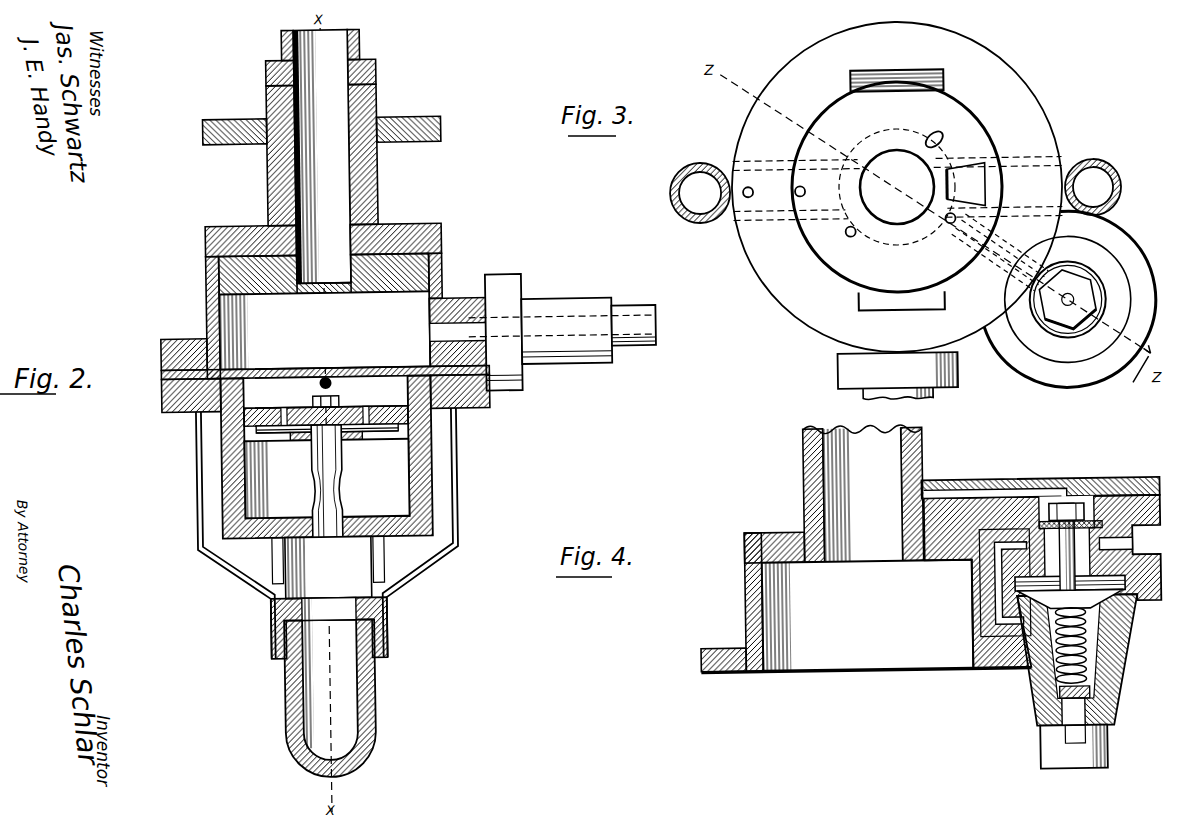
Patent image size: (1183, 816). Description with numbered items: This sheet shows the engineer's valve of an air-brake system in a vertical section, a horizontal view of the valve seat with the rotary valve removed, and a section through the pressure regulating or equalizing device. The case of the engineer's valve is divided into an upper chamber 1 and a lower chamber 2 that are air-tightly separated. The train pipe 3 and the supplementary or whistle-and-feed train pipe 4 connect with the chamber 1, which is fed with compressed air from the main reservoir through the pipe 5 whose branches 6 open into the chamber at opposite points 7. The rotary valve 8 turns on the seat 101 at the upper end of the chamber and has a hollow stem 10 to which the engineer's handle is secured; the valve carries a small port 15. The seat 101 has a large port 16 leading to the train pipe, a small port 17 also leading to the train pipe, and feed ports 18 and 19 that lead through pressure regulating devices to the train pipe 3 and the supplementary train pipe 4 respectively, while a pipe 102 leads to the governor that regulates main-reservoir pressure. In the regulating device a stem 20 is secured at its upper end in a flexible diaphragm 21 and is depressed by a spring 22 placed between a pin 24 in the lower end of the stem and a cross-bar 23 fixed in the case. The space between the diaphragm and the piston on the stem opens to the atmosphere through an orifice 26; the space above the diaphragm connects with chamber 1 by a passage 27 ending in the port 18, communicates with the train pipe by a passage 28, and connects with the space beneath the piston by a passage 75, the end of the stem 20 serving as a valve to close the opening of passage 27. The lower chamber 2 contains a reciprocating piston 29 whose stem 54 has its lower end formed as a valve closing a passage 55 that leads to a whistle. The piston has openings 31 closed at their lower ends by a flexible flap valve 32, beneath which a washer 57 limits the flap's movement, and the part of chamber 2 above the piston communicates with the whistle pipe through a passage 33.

In FIG. 2, the chamber 1 is at (270, 343).
In FIG. 2, the chamber 2 is at (326, 478).
In FIG. 3, the train pipe 3 is at (1117, 192).
In FIG. 3, the supplementary train pipe 4 is at (684, 192).
In FIG. 2, the pipe 5 is at (383, 712).
In FIG. 2, the branches 6 is at (196, 463).
In FIG. 2, the points 7 is at (226, 360).
In FIG. 3, the points 7 is at (899, 72).
In FIG. 2, the rotary valve 8 is at (392, 289).
In FIG. 2, the hollow stem 10 is at (322, 156).
In FIG. 3, the port 15 is at (815, 192).
In FIG. 3, the port 16 is at (966, 185).
In FIG. 3, the port 17 is at (938, 133).
In FIG. 3, the feed port 18 is at (949, 226).
In FIG. 4, the feed port 18 is at (921, 562).
In FIG. 3, the feed port 19 is at (850, 238).
In FIG. 4, the stem 20 is at (1116, 486).
In FIG. 4, the flexible diaphragm 21 is at (1046, 498).
In FIG. 4, the spring 22 is at (1088, 657).
In FIG. 4, the cross-bar 23 is at (1046, 598).
In FIG. 4, the pin 24 is at (1092, 693).
In FIG. 4, the orifice 26 is at (1135, 550).
In FIG. 3, the passage 27 is at (1000, 252).
In FIG. 4, the passage 27 is at (971, 490).
In FIG. 3, the passage 28 is at (1040, 233).
In FIG. 4, the passage 28 is at (1069, 504).
In FIG. 2, the reciprocating piston 29 is at (388, 412).
In FIG. 2, the openings 31 is at (284, 408).
In FIG. 2, the flexible flap valve 32 is at (294, 441).
In FIG. 2, the passage 33 is at (330, 376).
In FIG. 3, the passage 33 is at (751, 198).
In FIG. 2, the stem 54 is at (343, 486).
In FIG. 2, the passage 55 is at (272, 599).
In FIG. 2, the washer 57 is at (350, 441).
In FIG. 4, the passage 75 is at (992, 612).
In FIG. 2, the seat 101 is at (258, 294).
In FIG. 3, the seat 101 is at (896, 186).
In FIG. 4, the seat 101 is at (806, 562).
In FIG. 2, the pipe 102 is at (638, 355).
In FIG. 3, the pipe 102 is at (935, 394).